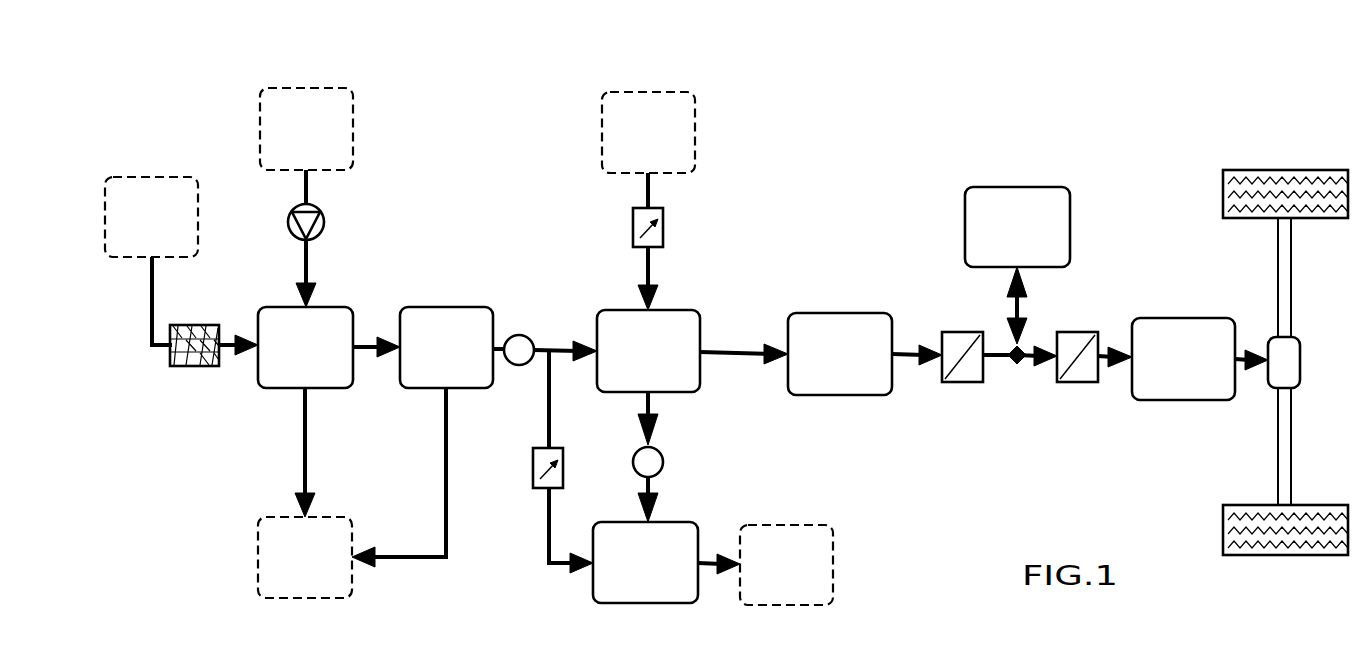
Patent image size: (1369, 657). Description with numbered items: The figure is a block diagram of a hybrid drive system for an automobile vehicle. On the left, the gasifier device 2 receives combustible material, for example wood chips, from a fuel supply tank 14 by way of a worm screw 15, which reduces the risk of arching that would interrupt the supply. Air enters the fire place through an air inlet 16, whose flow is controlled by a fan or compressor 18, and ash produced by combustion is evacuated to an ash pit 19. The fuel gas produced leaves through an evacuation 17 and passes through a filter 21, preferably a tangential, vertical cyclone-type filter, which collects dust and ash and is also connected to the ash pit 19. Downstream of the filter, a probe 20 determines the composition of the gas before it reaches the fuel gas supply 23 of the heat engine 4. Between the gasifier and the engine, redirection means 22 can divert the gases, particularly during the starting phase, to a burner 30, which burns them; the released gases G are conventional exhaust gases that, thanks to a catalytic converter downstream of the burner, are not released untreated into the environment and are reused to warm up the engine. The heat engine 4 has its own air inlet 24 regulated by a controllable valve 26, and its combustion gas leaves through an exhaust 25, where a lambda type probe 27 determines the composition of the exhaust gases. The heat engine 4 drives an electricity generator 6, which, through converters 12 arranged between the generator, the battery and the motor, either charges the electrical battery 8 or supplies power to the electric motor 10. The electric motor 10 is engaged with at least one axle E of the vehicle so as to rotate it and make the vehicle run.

The gasifier device 2 is at (281, 389).
The heat engine 4 is at (690, 321).
The electricity generator 6 is at (838, 323).
The electrical battery 8 is at (1023, 197).
The electric motor 10 is at (1172, 391).
The converters 12 is at (967, 374).
The fuel supply tank 14 is at (178, 178).
The worm screw 15 is at (205, 367).
The air inlet 16 is at (333, 92).
The evacuation of fuel gas 17 is at (365, 342).
The fan or compressor 18 is at (325, 227).
The ash pit 19 is at (259, 558).
The probe 20 is at (519, 334).
The filter 21 is at (445, 318).
The redirection means 22 is at (541, 485).
The fuel gas supply 23 is at (563, 343).
The air inlet 24 is at (694, 128).
The exhaust 25 is at (652, 405).
The controllable valve 26 is at (664, 229).
The lambda type probe 27 is at (664, 462).
The burner 30 is at (668, 594).
The released gases G is at (798, 533).
The axle E is at (1292, 256).